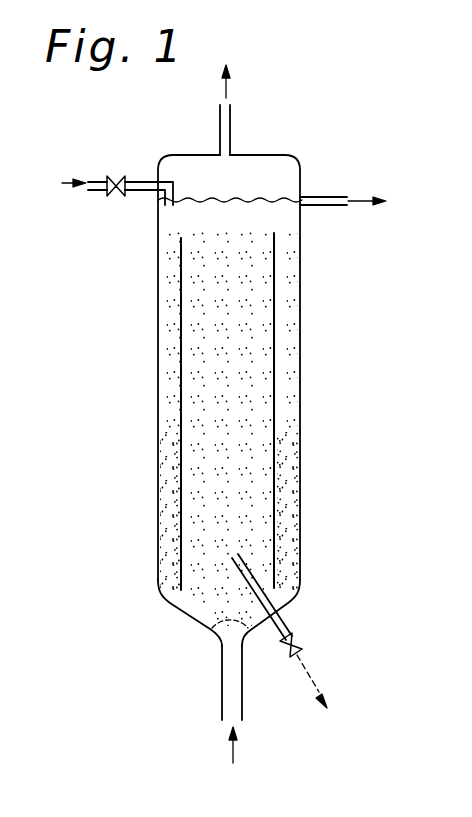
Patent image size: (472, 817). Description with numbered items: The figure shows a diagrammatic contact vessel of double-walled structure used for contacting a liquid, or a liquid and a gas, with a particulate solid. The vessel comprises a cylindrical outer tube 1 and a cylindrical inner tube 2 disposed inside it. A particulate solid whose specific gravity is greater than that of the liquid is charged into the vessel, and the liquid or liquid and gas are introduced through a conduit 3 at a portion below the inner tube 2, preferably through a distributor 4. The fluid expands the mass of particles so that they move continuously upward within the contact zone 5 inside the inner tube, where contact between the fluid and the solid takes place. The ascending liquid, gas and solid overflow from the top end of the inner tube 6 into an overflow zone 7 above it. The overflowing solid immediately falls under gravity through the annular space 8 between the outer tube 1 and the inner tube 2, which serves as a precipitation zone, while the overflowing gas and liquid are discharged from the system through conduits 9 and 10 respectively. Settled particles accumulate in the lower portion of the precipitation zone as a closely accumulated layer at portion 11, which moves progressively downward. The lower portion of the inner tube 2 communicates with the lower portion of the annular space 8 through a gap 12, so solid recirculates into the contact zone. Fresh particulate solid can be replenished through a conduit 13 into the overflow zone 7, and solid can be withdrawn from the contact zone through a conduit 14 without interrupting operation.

The outer tube 1 is at (300, 324).
The inner tube 2 is at (275, 390).
The conduit 3 is at (243, 696).
The distributor 4 is at (247, 631).
The contact zone 5 is at (242, 452).
The top end of the inner tube 6 is at (260, 233).
The overflow zone 7 is at (180, 222).
The annular space 8 is at (290, 290).
The conduit 9 is at (232, 118).
The conduit 10 is at (322, 197).
The closely accumulated layer portion 11 is at (295, 485).
The gap 12 is at (182, 602).
The conduit 13 is at (117, 178).
The conduit 14 is at (283, 631).